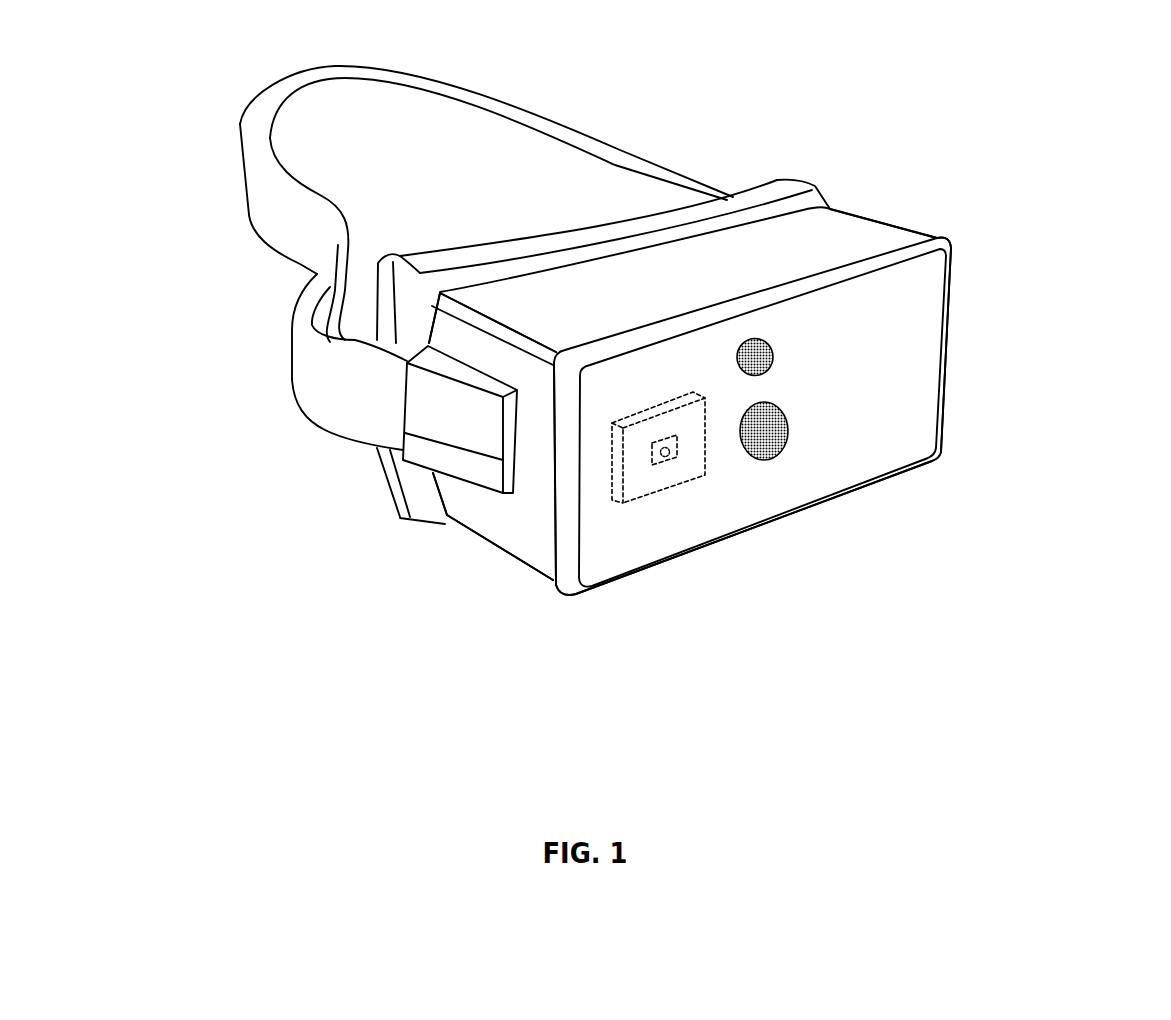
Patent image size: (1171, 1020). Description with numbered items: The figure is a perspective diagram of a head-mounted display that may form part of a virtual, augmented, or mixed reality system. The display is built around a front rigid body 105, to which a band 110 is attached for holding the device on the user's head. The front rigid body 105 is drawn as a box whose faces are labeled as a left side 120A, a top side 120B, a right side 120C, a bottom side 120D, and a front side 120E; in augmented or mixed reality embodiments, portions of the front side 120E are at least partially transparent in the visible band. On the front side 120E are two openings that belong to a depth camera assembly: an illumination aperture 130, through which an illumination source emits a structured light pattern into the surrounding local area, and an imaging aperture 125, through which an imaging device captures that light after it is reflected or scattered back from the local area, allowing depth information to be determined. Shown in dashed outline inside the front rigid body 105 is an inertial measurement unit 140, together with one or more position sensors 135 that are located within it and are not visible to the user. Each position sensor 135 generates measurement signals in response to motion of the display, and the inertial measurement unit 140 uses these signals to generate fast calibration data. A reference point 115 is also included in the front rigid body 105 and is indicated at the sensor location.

The front rigid body 105 is at (947, 238).
The band 110 is at (603, 140).
The reference point 115 is at (670, 460).
The left side 120A is at (913, 234).
The top side 120B is at (523, 297).
The right side 120C is at (527, 517).
The bottom side 120D is at (478, 562).
The front side 120E is at (600, 550).
The imaging aperture 125 is at (788, 432).
The illumination aperture 130 is at (773, 344).
The position sensors 135 is at (657, 466).
The inertial measurement unit (IMU) 140 is at (707, 463).